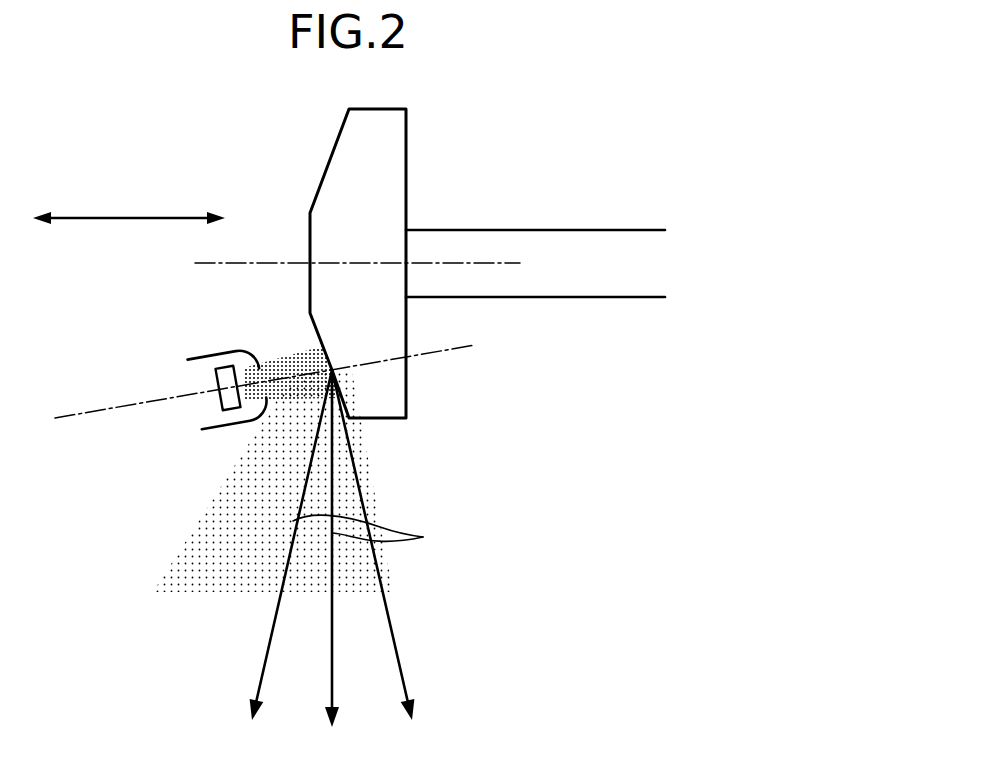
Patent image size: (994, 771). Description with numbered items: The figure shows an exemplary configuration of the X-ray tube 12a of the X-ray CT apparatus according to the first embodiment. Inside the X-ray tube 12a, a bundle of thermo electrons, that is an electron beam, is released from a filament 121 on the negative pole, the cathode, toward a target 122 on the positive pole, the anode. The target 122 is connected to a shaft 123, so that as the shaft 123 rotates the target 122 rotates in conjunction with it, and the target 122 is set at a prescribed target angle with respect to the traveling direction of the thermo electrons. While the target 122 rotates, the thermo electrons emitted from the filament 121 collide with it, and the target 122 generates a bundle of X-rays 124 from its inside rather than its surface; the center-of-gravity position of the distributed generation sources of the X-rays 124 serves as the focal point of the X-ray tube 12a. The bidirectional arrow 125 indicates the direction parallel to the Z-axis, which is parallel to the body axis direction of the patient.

The X-ray tube 12a is at (567, 126).
The filament 121 is at (215, 400).
The target 122 is at (405, 137).
The shaft 123 is at (604, 242).
The X-rays 124 is at (384, 533).
The bidirectional arrow 125 is at (126, 216).